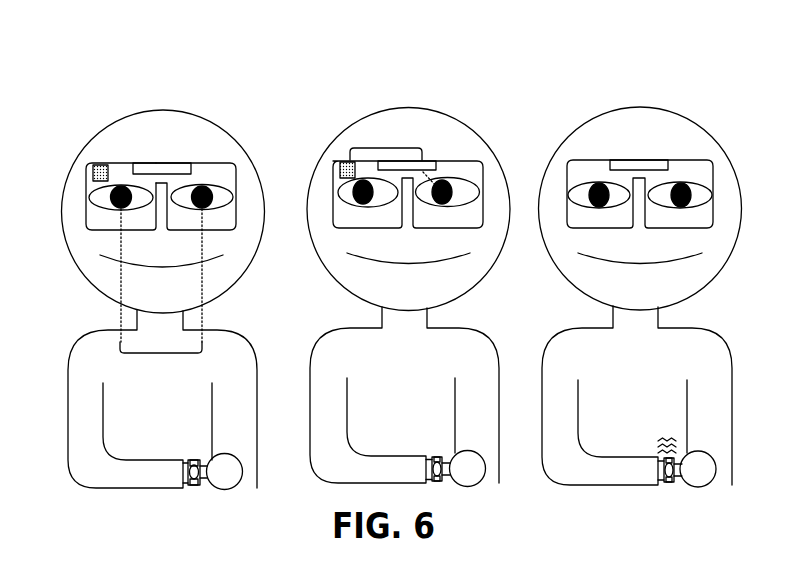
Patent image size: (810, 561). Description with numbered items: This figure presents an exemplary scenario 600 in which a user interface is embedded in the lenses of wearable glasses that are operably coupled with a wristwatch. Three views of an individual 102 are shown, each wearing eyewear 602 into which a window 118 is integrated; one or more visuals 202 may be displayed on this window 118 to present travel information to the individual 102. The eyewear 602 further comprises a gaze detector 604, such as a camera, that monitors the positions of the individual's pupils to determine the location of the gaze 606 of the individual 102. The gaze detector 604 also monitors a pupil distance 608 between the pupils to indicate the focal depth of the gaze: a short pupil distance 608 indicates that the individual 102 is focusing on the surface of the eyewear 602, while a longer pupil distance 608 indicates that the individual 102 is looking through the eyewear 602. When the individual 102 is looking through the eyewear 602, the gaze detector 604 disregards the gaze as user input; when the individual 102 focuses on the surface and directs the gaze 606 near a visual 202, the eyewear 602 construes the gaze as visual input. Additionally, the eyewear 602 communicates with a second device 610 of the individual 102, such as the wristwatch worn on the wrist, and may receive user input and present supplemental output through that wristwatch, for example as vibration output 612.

The exemplary scenario 600 is at (120, 47).
The individual 102 is at (93, 137).
The visual 202 is at (93, 165).
The window 118 is at (93, 213).
The eyewear 602 is at (115, 163).
The gaze detector 604 is at (175, 168).
The gaze 606 is at (121, 322).
The pupil distance 608 is at (163, 355).
The second device 610 is at (193, 463).
The vibration output 612 is at (668, 442).